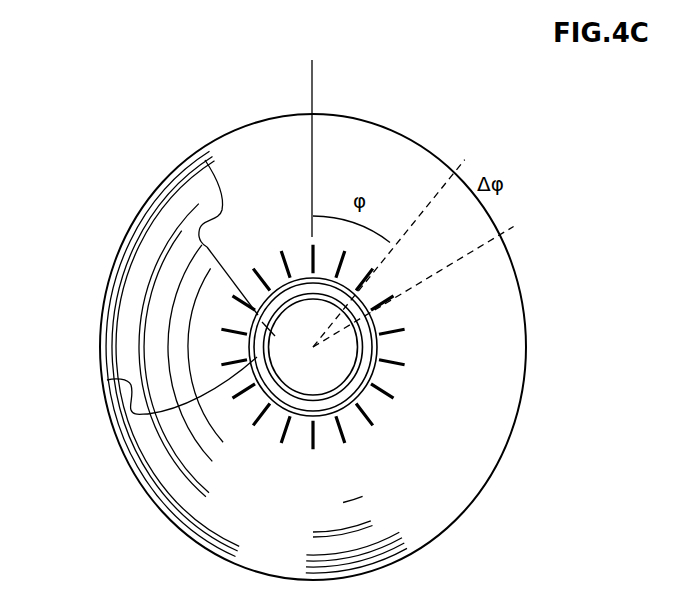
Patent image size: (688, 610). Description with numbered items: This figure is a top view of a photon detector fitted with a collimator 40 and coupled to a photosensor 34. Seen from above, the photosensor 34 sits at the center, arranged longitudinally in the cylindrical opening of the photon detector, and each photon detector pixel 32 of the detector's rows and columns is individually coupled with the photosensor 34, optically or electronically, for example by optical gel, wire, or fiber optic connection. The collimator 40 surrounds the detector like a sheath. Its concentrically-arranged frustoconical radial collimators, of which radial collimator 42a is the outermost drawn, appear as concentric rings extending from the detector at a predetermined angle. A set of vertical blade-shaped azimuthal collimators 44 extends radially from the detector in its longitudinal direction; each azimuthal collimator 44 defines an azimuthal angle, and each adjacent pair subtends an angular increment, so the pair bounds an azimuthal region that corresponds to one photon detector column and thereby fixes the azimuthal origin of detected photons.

The collimator 40 is at (85, 202).
The photosensor 34 is at (205, 165).
The photon detector pixel 32 is at (107, 380).
The radial collimator 42a is at (383, 160).
The azimuthal collimator 44 is at (405, 370).